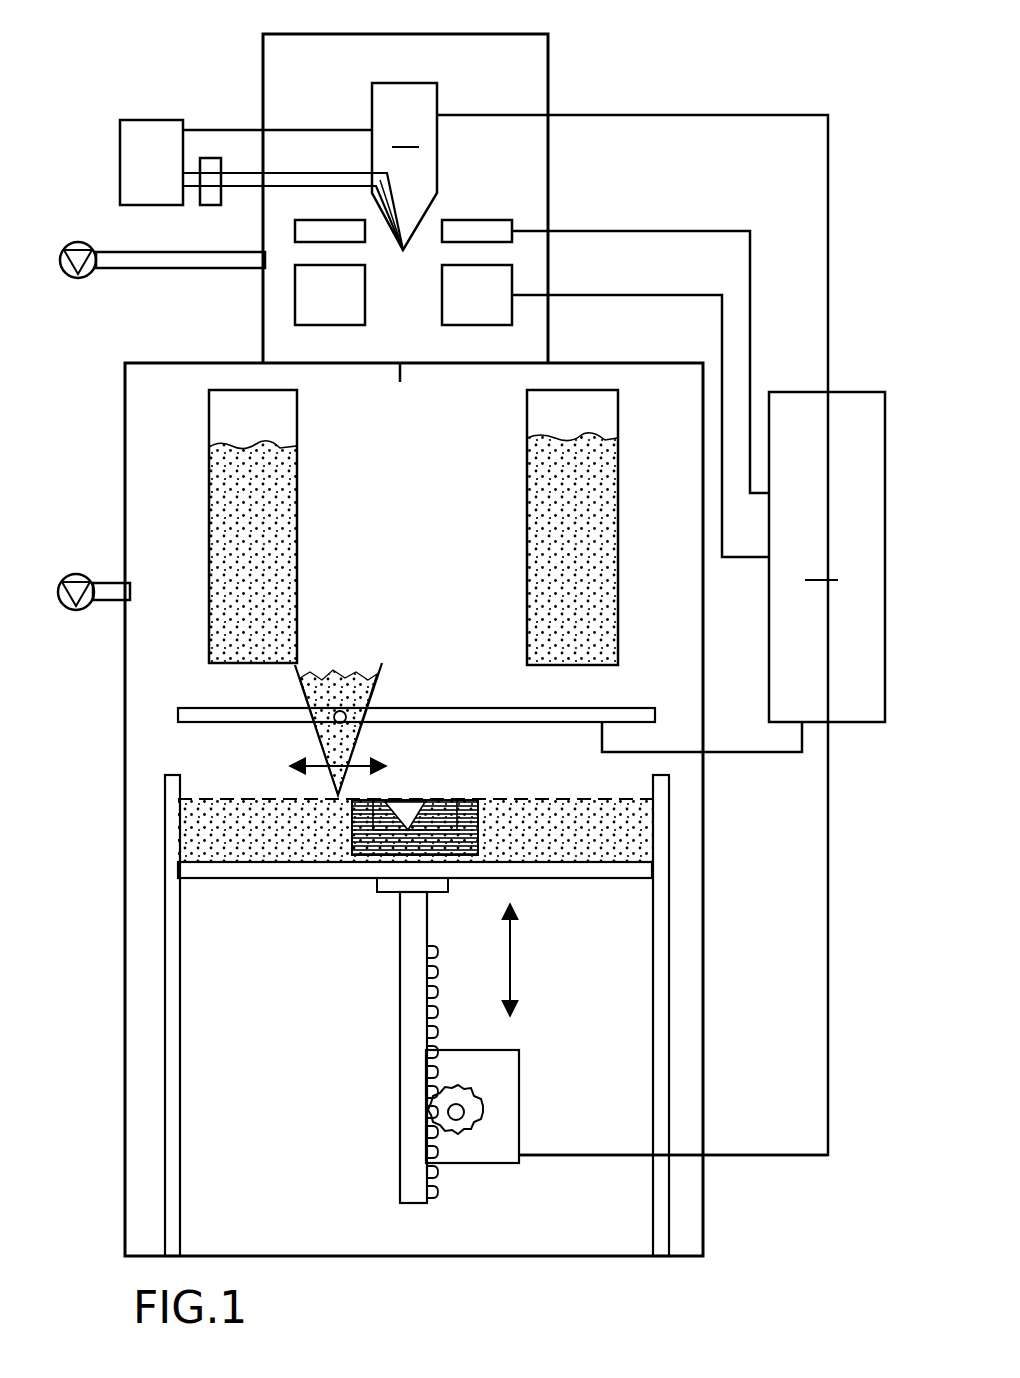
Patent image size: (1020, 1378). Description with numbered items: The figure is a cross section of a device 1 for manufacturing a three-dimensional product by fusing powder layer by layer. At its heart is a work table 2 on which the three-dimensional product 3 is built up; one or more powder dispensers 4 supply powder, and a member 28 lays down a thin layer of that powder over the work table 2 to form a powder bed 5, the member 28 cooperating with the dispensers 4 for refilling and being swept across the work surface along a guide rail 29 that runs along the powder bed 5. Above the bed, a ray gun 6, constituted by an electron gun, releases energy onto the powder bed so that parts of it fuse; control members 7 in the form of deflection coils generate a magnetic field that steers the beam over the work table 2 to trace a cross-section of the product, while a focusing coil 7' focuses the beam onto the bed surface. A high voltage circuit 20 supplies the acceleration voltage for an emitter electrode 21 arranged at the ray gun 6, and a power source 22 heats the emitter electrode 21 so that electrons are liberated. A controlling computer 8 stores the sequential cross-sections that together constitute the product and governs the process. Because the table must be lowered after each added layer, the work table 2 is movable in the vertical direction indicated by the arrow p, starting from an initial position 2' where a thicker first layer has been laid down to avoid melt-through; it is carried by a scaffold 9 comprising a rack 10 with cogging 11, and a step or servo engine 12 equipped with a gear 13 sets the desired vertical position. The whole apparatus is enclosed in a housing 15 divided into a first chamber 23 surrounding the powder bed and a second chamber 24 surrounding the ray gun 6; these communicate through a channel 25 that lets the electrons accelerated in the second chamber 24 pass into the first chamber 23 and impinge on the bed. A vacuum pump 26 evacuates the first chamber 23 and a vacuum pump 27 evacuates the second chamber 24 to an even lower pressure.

The device for manufacturing a three-dimensional product 1 is at (136, 63).
The work table 2 is at (415, 887).
The initial position 2' is at (415, 773).
The three-dimensional product 3 is at (480, 799).
The powder dispensers 4 is at (298, 492).
The powder bed 5 is at (598, 812).
The ray gun 6 is at (404, 166).
The control members 7 is at (532, 319).
The focusing coil 7' is at (532, 403).
The controlling computer 8 is at (661, 635).
The scaffold 9 is at (384, 1086).
The rack 10 is at (406, 998).
The cogging 11 is at (440, 1003).
The step or servo engine 12 is at (512, 1080).
The gear 13 is at (470, 1128).
The housing 15 is at (706, 975).
The high voltage circuit 20 is at (140, 168).
The emitter electrode 21 is at (403, 250).
The power source 22 is at (210, 165).
The first chamber 23 is at (165, 467).
The second chamber 24 is at (508, 73).
The channel 25 is at (400, 383).
The vacuum pump 26 is at (96, 580).
The vacuum pump 27 is at (95, 276).
The member 28 is at (383, 673).
The guide rail 29 is at (602, 708).
The arrow P p is at (512, 980).